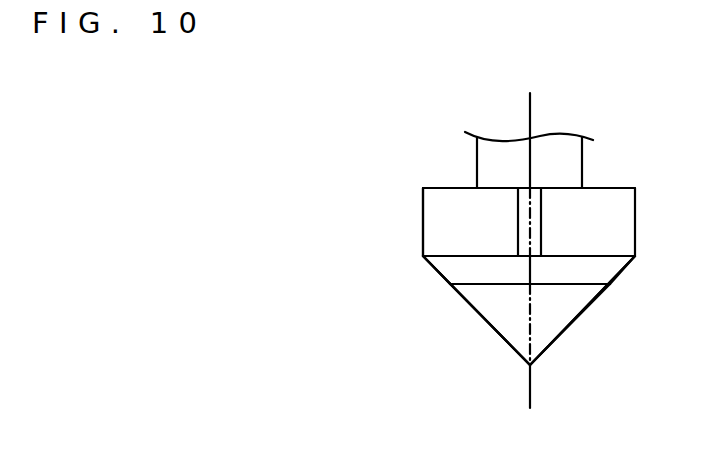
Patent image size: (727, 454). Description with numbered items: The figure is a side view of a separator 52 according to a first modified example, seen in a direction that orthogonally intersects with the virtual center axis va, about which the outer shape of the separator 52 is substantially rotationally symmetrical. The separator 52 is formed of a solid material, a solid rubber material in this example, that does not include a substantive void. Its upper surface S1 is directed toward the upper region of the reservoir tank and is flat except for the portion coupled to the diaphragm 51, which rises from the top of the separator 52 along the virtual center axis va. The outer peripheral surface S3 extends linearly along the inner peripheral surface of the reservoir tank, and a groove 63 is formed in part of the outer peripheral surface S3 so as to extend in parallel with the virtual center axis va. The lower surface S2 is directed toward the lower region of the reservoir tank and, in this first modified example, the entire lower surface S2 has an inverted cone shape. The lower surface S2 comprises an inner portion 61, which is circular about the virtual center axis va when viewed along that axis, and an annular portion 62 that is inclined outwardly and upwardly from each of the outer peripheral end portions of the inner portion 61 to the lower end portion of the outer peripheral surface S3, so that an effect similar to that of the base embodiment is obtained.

The diaphragm 51 is at (558, 148).
The separator 52 is at (317, 180).
The inner portion 61 is at (498, 318).
The annular portion 62 is at (442, 268).
The groove 63 is at (526, 218).
The upper surface S1 is at (610, 187).
The lower surface S2 is at (478, 367).
The outer peripheral surface S3 is at (423, 215).
The virtual center axis va is at (528, 115).